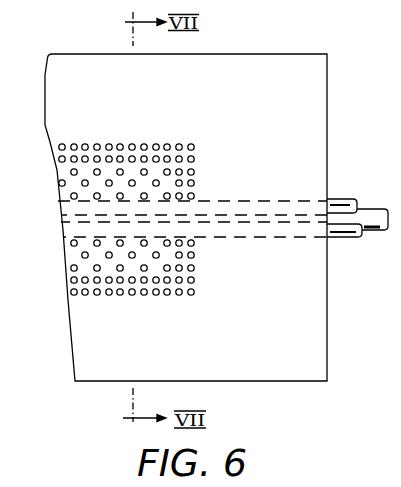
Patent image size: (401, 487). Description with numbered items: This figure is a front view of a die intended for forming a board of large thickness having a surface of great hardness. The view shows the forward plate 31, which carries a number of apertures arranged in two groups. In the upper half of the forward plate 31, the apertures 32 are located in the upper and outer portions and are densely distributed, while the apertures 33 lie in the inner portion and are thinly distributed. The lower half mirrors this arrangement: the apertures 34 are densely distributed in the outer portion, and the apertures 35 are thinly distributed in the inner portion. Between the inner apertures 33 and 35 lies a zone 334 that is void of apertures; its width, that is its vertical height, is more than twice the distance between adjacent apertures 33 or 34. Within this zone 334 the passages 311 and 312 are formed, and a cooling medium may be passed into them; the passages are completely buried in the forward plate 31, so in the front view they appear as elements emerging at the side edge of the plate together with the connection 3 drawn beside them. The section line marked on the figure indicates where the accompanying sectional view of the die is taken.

The connector 3 is at (392, 250).
The forward plate 31 is at (308, 84).
The passage 311 is at (340, 204).
The passage 312 is at (347, 238).
The apertures 32 is at (192, 169).
The apertures 33 is at (94, 197).
The zone void of apertures 334 is at (171, 209).
The apertures 34 is at (193, 258).
The apertures 35 is at (94, 268).